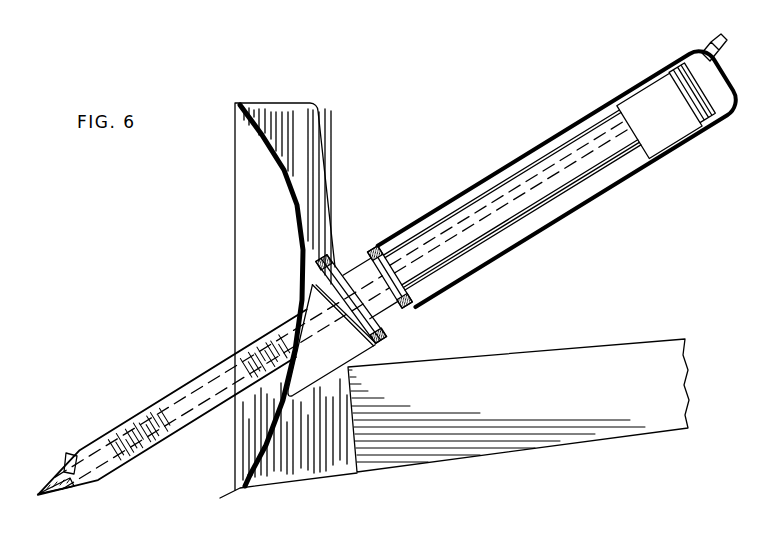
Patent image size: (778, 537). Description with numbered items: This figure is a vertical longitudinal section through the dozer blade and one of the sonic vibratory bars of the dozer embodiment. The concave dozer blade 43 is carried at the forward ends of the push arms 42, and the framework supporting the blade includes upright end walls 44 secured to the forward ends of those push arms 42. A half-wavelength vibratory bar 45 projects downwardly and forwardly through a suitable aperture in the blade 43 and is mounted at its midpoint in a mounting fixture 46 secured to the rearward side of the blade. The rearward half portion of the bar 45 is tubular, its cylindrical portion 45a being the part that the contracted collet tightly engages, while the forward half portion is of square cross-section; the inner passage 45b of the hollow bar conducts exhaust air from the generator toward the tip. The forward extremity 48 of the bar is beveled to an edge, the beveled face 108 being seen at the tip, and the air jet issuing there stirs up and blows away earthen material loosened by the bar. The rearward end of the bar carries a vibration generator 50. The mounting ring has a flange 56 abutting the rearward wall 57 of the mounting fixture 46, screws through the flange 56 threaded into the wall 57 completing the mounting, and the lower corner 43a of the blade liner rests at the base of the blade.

The push arms 42 is at (458, 448).
The concave dozer blade 43 is at (303, 190).
The lower corner of wall liner 43a is at (240, 489).
The upright end walls 44 is at (298, 484).
The half-wavelength vibratory bars 45 is at (218, 362).
The cylindrical portion of the bar 45a is at (527, 175).
The inner tube 45b is at (142, 413).
The mounting fixture 46 is at (339, 371).
The forward extremities of the bars 48 is at (72, 454).
The vibration generators 50 is at (668, 144).
The flange 56 is at (378, 333).
The rearward wall of mounting fixture 57 is at (368, 348).
The bevel face 108 is at (65, 471).